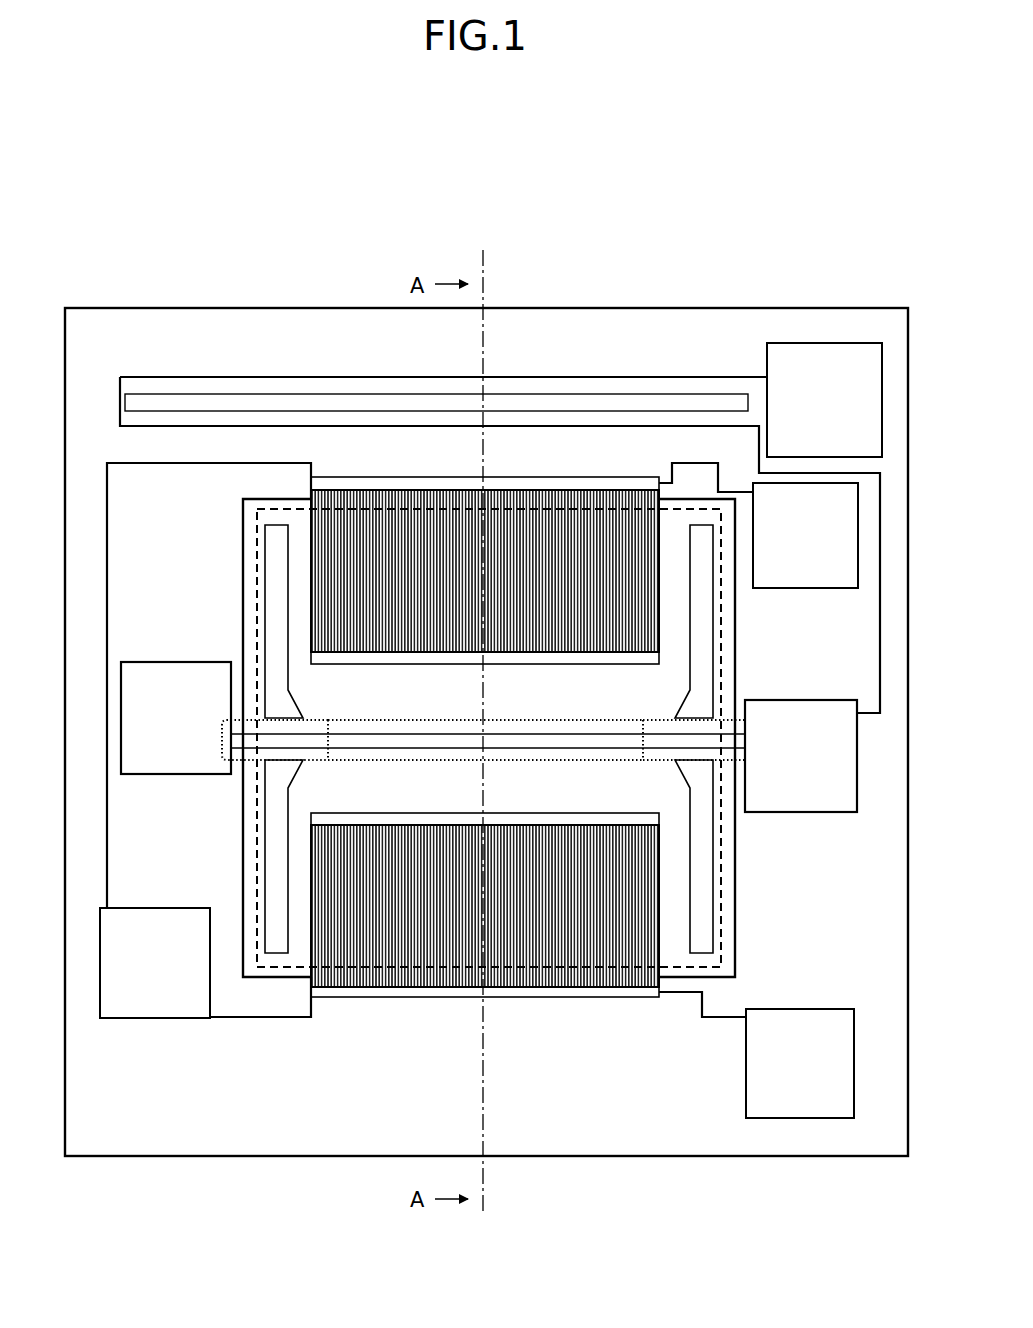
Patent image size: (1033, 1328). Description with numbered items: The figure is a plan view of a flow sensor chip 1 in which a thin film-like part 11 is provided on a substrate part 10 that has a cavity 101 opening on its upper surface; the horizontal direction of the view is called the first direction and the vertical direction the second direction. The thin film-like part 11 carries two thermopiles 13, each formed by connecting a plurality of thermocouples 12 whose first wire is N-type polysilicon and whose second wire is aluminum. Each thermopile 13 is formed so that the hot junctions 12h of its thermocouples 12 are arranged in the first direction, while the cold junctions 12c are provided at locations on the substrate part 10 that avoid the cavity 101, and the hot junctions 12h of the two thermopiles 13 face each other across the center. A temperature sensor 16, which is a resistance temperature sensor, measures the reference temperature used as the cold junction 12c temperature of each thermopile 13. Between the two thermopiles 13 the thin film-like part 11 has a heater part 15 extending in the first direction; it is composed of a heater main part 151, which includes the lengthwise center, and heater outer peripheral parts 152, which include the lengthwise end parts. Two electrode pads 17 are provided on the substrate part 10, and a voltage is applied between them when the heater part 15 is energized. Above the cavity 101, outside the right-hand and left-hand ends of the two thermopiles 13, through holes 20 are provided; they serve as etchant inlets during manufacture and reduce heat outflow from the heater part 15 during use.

The flow sensor chip 1 is at (728, 180).
The substrate part 10 is at (122, 1157).
The thin film-like part 11 is at (737, 948).
The thermocouple 12 is at (552, 491).
The cold junction 12c is at (363, 485).
The hot junction 12h is at (347, 664).
The thermopile 13 is at (286, 489).
The heater part 15 is at (506, 743).
The heater main part 151 is at (535, 722).
The heater outer peripheral part 152 is at (238, 753).
The temperature sensor 16 is at (587, 377).
The electrode pad 17 is at (174, 688).
The through hole 20 is at (270, 606).
The cavity 101 is at (283, 967).